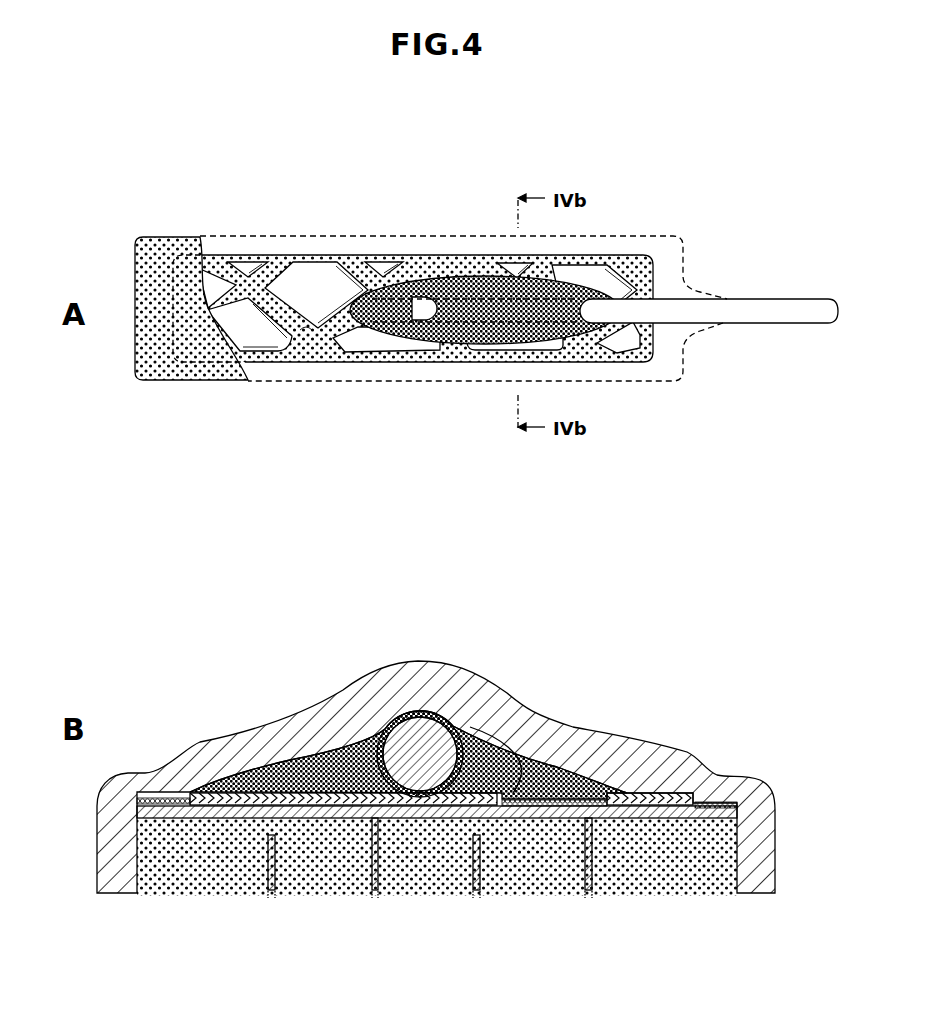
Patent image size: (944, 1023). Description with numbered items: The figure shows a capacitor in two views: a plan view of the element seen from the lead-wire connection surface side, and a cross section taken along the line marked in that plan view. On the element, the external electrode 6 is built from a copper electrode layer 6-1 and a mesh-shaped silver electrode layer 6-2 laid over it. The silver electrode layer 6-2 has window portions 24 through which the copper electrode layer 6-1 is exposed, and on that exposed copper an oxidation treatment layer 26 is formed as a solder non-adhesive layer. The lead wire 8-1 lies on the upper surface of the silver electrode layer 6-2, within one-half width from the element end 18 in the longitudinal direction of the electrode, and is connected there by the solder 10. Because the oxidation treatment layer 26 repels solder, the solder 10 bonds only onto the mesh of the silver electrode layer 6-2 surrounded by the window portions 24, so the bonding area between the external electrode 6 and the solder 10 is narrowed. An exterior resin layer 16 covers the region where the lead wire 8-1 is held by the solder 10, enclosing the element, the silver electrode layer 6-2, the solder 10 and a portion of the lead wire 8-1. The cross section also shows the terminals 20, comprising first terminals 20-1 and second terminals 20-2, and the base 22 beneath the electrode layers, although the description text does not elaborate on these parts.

The external electrode 6 is at (452, 152).
The copper electrode layer 6-1 is at (354, 263).
The silver electrode layer 6-2 is at (448, 266).
The lead wire 8-1 is at (755, 298).
The solder 10 is at (445, 344).
The exterior resin layer 16 is at (203, 278).
The element end 18 is at (655, 337).
The terminals 20 is at (457, 912).
The first terminal 20-1 is at (377, 873).
The second terminal 20-2 is at (275, 867).
The base 22 is at (710, 860).
The window portion 24 is at (298, 328).
The oxidation treatment layer 26 is at (280, 260).